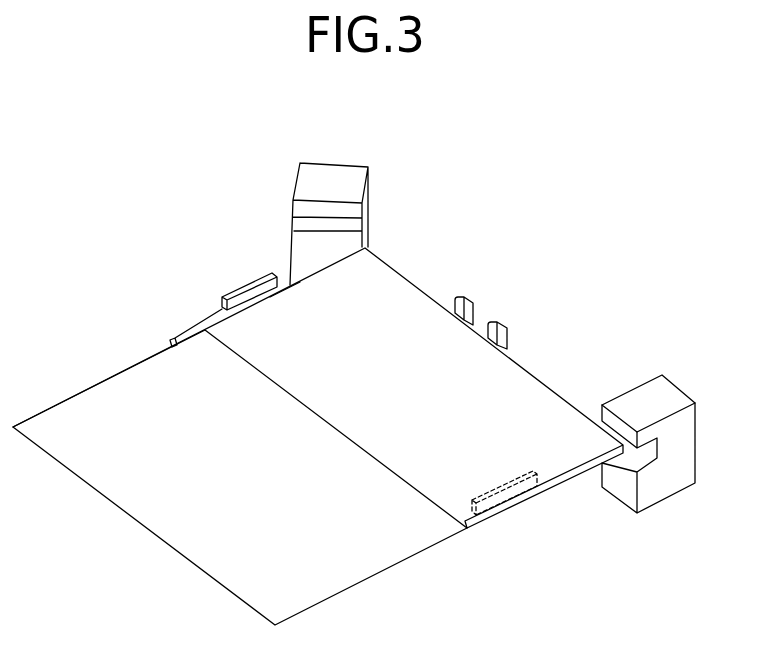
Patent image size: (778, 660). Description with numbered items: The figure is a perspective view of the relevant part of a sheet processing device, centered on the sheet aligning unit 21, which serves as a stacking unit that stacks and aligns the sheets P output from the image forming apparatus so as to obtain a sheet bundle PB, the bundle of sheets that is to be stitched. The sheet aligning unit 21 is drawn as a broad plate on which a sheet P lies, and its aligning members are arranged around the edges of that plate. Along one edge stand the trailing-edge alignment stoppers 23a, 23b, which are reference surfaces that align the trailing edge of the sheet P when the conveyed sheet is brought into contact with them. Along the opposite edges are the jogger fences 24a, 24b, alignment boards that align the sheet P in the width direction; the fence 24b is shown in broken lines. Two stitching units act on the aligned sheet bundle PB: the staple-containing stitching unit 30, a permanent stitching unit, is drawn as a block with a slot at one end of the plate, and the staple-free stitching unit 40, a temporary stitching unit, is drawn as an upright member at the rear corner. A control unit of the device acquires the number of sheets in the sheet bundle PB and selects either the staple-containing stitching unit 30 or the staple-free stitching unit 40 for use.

The sheet aligning unit 21 is at (200, 283).
The sheet P is at (95, 413).
The sheet bundle PB is at (288, 305).
The jogger fence 24a is at (240, 293).
The jogger fence 24b is at (507, 513).
The trailing-edge alignment stopper 23a is at (463, 294).
The trailing-edge alignment stopper 23b is at (497, 321).
The staple-containing stitching unit 30 is at (667, 397).
The staple-free stitching unit 40 is at (335, 178).